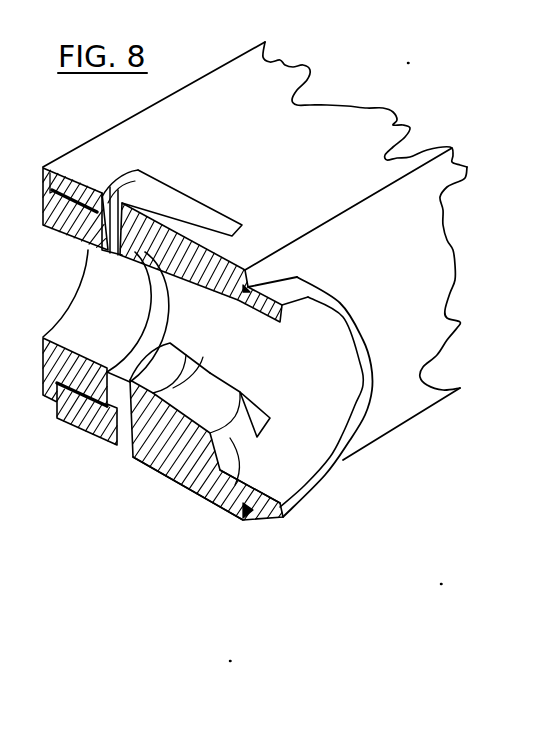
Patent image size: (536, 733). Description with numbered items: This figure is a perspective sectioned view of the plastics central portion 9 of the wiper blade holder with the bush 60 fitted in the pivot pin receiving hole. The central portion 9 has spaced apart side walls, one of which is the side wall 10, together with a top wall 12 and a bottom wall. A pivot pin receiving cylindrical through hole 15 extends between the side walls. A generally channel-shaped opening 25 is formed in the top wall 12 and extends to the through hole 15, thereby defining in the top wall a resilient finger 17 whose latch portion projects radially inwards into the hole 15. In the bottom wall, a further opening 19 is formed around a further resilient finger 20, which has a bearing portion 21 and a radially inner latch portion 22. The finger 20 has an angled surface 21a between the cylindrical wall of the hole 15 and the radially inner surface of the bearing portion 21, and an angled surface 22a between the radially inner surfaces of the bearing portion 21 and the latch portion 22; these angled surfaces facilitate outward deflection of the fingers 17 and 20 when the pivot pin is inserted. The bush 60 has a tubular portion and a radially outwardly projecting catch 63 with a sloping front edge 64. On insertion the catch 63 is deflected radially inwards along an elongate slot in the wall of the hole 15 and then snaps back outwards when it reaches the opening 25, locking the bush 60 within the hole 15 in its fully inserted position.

The plastics central portion 9 is at (95, 147).
The side wall 10 is at (433, 263).
The top wall 12 is at (331, 191).
The pivot pin receiving cylindrical through hole 15 is at (319, 413).
The resilient finger 17 is at (183, 226).
The further opening 19 is at (127, 423).
The further resilient finger 20 is at (130, 458).
The bearing portion 21 is at (217, 393).
The angled surface 21a is at (220, 507).
The latch portion 22 is at (173, 353).
The angled surface 22a is at (152, 463).
The channel-shaped opening 25 is at (175, 198).
The bush 60 is at (90, 303).
The catch 63 is at (110, 205).
The sloping front edge 64 is at (140, 183).